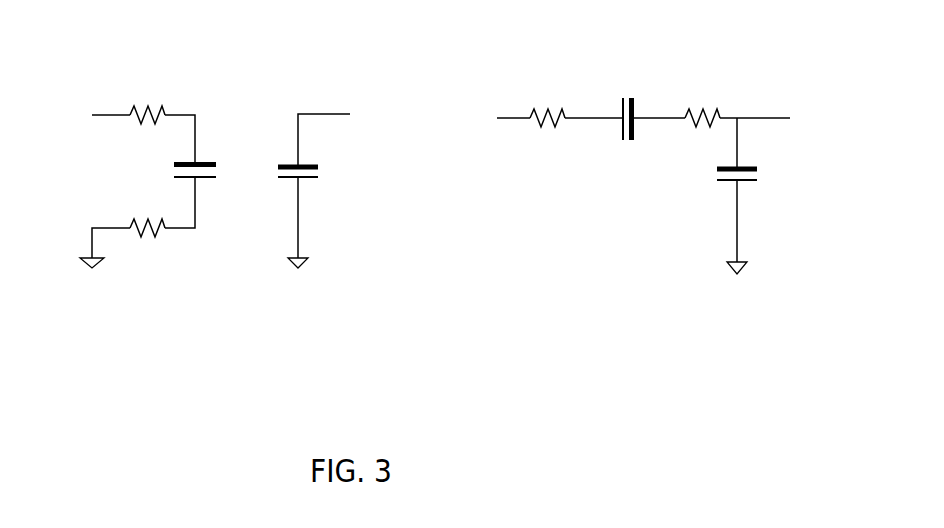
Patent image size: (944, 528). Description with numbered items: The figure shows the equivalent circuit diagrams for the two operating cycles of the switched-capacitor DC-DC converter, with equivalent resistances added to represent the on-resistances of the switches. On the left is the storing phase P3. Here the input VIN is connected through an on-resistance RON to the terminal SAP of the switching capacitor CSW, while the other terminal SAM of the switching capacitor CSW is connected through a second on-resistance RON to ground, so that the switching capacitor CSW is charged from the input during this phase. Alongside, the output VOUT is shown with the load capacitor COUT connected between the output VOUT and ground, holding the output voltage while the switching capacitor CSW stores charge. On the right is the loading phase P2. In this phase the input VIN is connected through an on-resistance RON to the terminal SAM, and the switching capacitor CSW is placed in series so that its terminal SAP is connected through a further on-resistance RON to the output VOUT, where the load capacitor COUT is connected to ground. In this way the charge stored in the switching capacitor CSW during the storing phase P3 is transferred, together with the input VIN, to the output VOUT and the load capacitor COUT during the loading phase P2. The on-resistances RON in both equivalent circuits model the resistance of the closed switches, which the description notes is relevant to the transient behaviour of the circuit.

The input voltage VIN is at (296, 108).
The on-resistance RON is at (425, 162).
The switching capacitor terminal SAP is at (425, 130).
The switching capacitor terminal SAM is at (393, 165).
The switching capacitor CSW is at (421, 137).
The load capacitor COUT is at (535, 196).
The output voltage VOUT is at (545, 130).
The storing phase P3 is at (208, 277).
The loading phase P2 is at (623, 274).